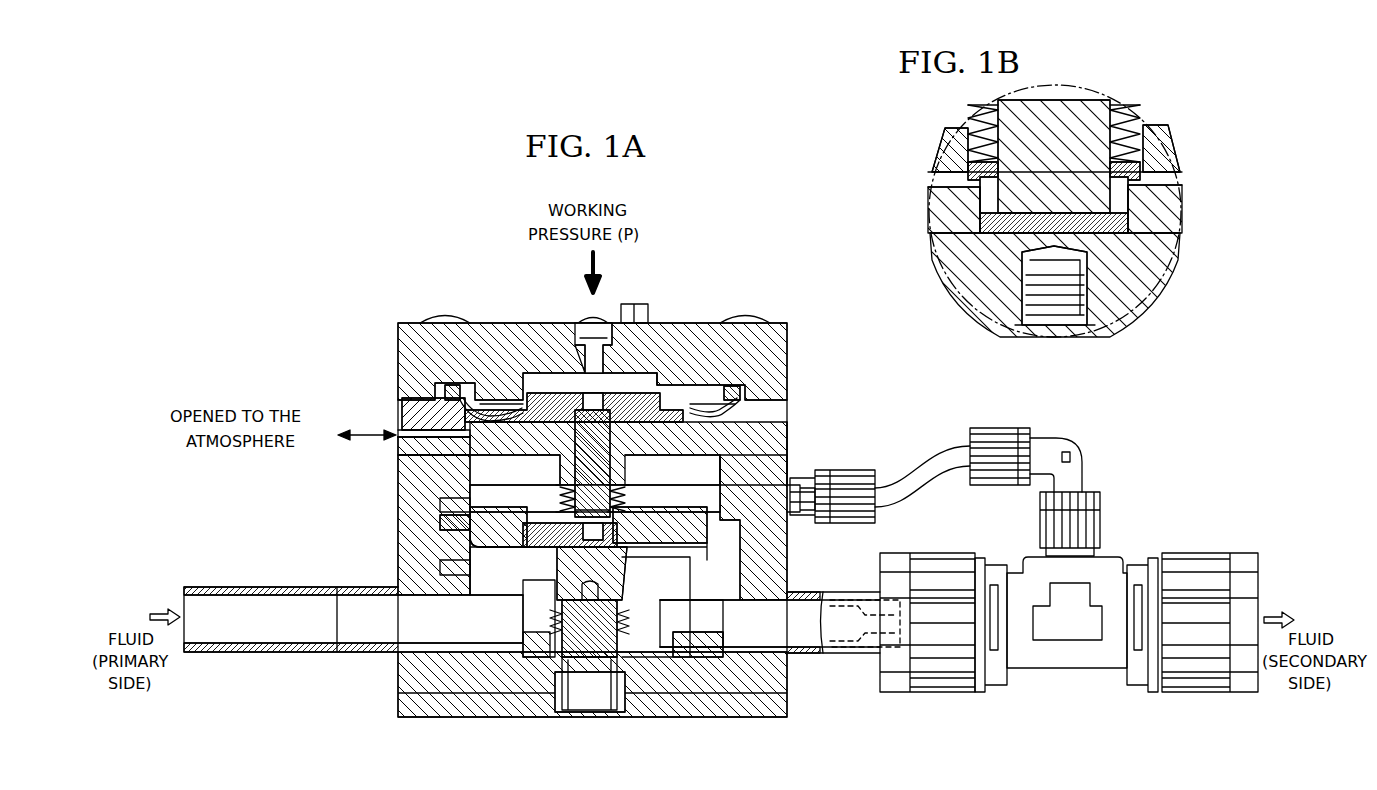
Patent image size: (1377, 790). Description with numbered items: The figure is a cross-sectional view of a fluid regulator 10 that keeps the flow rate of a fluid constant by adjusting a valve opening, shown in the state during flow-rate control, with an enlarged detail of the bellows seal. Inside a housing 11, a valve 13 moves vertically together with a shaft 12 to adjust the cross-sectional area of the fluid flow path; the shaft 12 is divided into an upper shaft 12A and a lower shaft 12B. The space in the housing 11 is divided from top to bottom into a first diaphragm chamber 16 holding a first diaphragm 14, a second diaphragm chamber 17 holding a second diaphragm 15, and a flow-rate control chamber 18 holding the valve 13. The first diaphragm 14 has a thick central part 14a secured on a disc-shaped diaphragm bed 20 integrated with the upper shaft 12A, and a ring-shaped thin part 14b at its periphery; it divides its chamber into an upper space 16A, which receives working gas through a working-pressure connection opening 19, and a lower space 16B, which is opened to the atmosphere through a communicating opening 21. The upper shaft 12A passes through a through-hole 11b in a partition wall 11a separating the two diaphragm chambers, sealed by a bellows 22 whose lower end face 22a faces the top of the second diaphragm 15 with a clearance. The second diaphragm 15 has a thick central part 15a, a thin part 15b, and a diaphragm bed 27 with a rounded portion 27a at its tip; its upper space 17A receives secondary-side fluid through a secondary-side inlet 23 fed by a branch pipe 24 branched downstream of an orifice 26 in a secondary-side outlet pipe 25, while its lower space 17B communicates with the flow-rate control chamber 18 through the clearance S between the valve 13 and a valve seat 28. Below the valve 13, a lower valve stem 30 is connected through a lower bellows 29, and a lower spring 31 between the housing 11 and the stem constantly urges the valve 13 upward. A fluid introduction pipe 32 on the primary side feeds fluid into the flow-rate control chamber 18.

In FIG. 1A, the fluid regulator 10 is at (768, 272).
In FIG. 1A, the housing 11 is at (400, 458).
In FIG. 1A, the partition wall 11a is at (548, 462).
In FIG. 1B, the partition wall 11a is at (1163, 155).
In FIG. 1A, the through-hole 11b is at (560, 480).
In FIG. 1A, the shaft 12 is at (615, 428).
In FIG. 1A, the upper shaft 12A is at (602, 448).
In FIG. 1B, the upper shaft 12A is at (1088, 105).
In FIG. 1A, the lower shaft 12B is at (603, 552).
In FIG. 1B, the lower shaft 12B is at (1068, 333).
In FIG. 1A, the valve 13 is at (710, 617).
In FIG. 1A, the first diaphragm 14 is at (551, 385).
In FIG. 1A, the central part of the first diaphragm 14a is at (538, 450).
In FIG. 1A, the thin part of the first diaphragm 14b is at (707, 407).
In FIG. 1A, the second diaphragm 15 is at (500, 540).
In FIG. 1B, the second diaphragm 15 is at (1150, 270).
In FIG. 1A, the central part of the second diaphragm 15a is at (643, 527).
In FIG. 1A, the thin part of the second diaphragm 15b is at (465, 540).
In FIG. 1A, the first diaphragm chamber 16 is at (647, 378).
In FIG. 1A, the upper space of the first diaphragm 16A is at (660, 382).
In FIG. 1A, the lower space of the first diaphragm 16B is at (733, 408).
In FIG. 1A, the second diaphragm chamber 17 is at (707, 495).
In FIG. 1A, the upper space of the second diaphragm 17A is at (540, 484).
In FIG. 1A, the lower space of the second diaphragm 17B is at (460, 570).
In FIG. 1A, the flow-rate control chamber 18 is at (647, 627).
In FIG. 1A, the working-pressure connection opening 19 is at (588, 333).
In FIG. 1A, the diaphragm bed 20 is at (726, 418).
In FIG. 1A, the communicating opening 21 is at (400, 430).
In FIG. 1A, the bellows 22 is at (560, 497).
In FIG. 1B, the bellows 22 is at (1140, 122).
In FIG. 1B, the lower end face of the bellows 22a is at (980, 257).
In FIG. 1A, the secondary-side inlet 23 is at (750, 503).
In FIG. 1A, the branch pipe 24 is at (937, 455).
In FIG. 1A, the secondary-side outlet pipe 25 is at (813, 655).
In FIG. 1A, the orifice 26 is at (860, 650).
In FIG. 1A, the diaphragm bed 27 is at (470, 522).
In FIG. 1B, the diaphragm bed 27 is at (1167, 210).
In FIG. 1A, the rounded portion 27a is at (477, 548).
In FIG. 1A, the valve seat 28 is at (620, 590).
In FIG. 1A, the lower bellows 29 is at (547, 620).
In FIG. 1A, the lower valve stem 30 is at (583, 653).
In FIG. 1A, the lower spring 31 is at (618, 680).
In FIG. 1A, the fluid introduction pipe 32 is at (273, 652).
In FIG. 1A, the clearance S is at (560, 570).